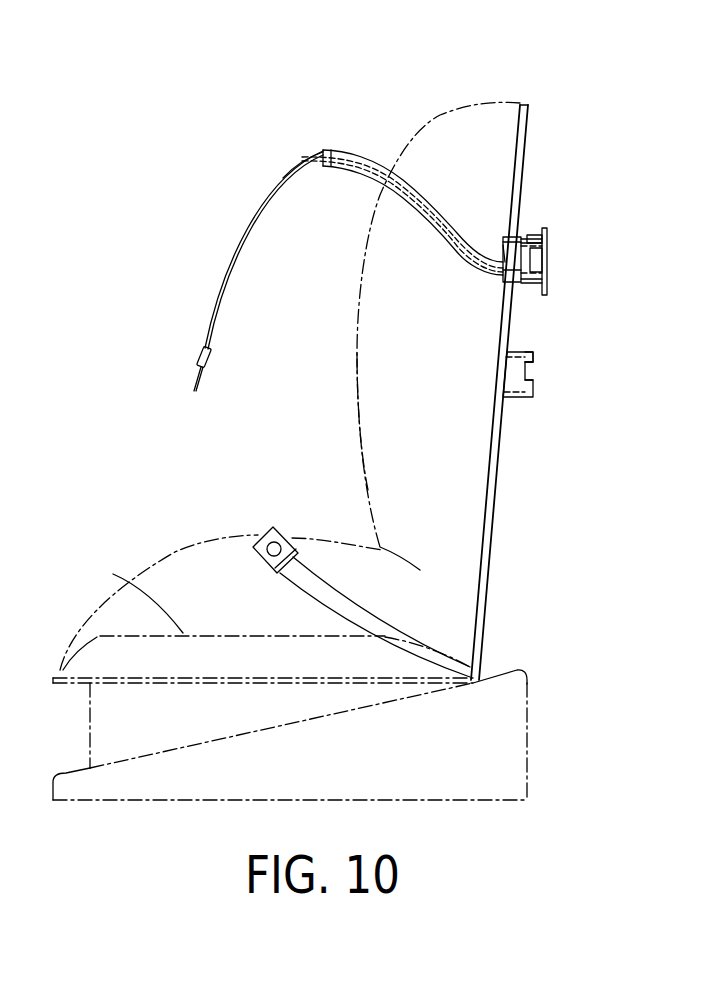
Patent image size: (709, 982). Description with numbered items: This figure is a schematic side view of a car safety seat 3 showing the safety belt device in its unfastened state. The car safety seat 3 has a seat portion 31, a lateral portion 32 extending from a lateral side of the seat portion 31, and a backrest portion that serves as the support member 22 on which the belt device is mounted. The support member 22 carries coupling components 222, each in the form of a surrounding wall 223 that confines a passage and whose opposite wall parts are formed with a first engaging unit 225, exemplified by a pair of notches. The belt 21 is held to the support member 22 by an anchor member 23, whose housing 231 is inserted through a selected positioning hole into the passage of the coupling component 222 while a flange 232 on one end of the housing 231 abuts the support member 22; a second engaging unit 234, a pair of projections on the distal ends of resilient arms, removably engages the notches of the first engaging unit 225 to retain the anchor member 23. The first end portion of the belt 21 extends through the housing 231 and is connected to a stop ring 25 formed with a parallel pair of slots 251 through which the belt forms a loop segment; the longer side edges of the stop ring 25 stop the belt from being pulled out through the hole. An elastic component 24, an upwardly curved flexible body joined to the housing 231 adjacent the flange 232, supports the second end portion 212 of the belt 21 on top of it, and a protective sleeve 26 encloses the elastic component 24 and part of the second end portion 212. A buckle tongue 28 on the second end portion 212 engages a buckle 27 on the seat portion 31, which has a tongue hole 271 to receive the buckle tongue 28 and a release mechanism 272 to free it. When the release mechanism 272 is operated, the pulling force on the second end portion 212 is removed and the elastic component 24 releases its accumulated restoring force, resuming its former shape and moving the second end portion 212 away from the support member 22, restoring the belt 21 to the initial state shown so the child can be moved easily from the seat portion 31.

The car safety seat 3 is at (337, 414).
The belt 21 is at (240, 229).
The second end portion 212 is at (298, 163).
The support member 22 is at (517, 137).
The coupling component 222 is at (518, 400).
The surrounding wall 223 is at (535, 360).
The first engaging unit 225 is at (523, 272).
The anchor member 23 is at (501, 284).
The housing 231 is at (530, 236).
The flange 232 is at (507, 238).
The second engaging unit 234 is at (546, 234).
The elastic component 24 is at (406, 212).
The stop ring 25 is at (547, 228).
The slots 251 is at (547, 250).
The protective sleeve 26 is at (375, 157).
The buckle 27 is at (270, 527).
The tongue hole 271 is at (264, 537).
The release mechanism 272 is at (283, 531).
The buckle tongue 28 is at (199, 355).
The seat portion 31 is at (113, 574).
The lateral portion 32 is at (357, 355).